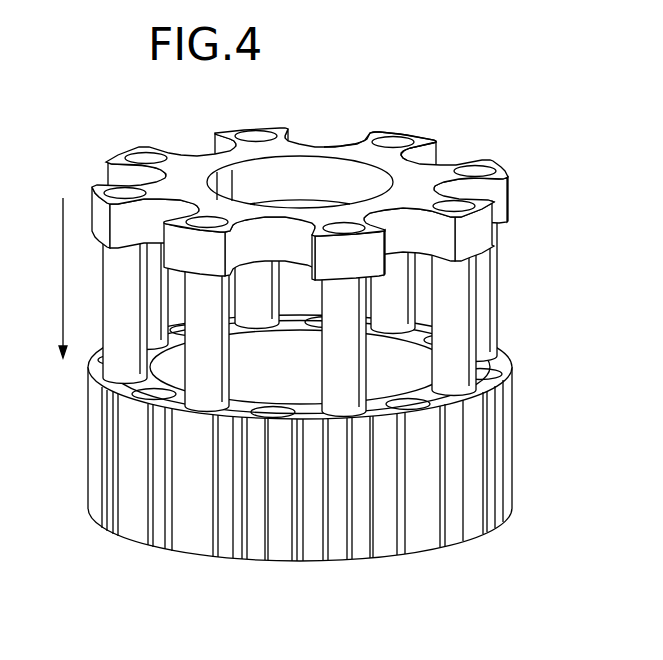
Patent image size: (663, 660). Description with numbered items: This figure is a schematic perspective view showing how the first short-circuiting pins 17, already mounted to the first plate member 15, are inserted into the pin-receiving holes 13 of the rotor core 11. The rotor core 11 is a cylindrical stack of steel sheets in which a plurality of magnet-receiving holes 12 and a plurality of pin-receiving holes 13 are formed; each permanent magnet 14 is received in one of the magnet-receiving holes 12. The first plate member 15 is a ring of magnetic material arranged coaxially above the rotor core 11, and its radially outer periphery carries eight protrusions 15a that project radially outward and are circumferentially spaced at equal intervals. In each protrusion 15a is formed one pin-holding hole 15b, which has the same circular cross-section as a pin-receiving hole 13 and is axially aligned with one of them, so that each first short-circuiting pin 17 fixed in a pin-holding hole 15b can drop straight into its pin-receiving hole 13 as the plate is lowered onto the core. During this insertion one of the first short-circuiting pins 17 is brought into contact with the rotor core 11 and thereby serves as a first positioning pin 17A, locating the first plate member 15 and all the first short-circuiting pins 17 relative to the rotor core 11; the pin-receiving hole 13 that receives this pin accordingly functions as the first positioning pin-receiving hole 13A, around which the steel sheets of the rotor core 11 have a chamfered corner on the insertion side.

The rotor core 11 is at (345, 466).
The magnet-receiving holes 12 is at (303, 407).
The pin-receiving holes 13 is at (272, 420).
The first positioning pin-receiving hole 13A is at (347, 413).
The permanent magnets 14 is at (267, 413).
The first plate member 15 is at (306, 173).
The protrusions 15a is at (426, 136).
The pin-holding hole 15b is at (395, 136).
The first short-circuiting pins 17 is at (289, 279).
The first positioning pin 17A is at (355, 362).